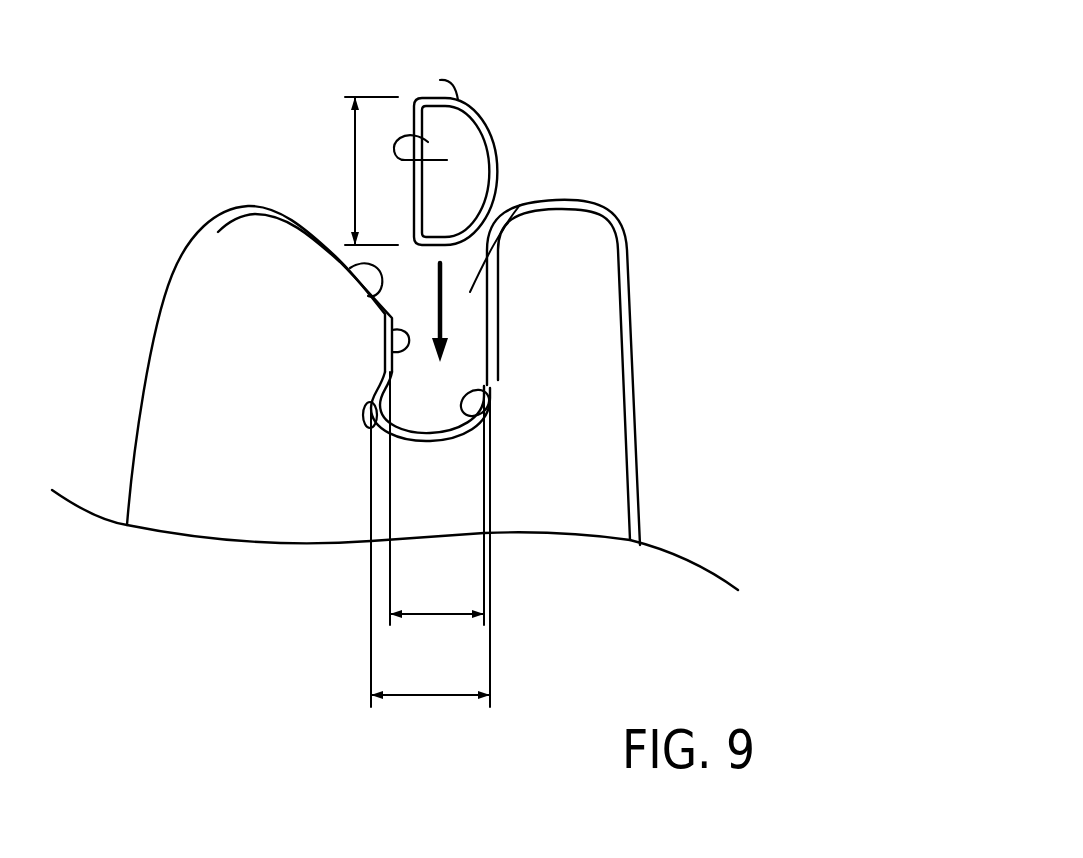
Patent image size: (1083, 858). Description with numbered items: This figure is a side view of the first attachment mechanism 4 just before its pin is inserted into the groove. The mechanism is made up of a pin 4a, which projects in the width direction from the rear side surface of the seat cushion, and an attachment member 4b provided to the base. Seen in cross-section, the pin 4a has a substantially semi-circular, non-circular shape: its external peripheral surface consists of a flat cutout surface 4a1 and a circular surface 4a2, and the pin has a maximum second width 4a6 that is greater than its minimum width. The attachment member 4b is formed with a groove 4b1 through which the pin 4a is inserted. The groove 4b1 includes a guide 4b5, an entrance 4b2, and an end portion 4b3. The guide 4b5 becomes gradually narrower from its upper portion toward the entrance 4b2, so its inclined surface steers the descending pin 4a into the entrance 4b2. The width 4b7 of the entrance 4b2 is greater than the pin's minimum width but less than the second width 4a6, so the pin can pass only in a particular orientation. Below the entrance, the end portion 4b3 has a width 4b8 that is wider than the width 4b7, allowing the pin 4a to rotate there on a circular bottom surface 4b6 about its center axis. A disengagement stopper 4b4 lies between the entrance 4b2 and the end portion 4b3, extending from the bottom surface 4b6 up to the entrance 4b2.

The first attachment mechanism 4 is at (622, 100).
The pin 4a is at (477, 120).
The flat cutout surface 4a1 is at (447, 160).
The circular surface 4a2 is at (440, 80).
The second width 4a6 is at (352, 172).
The attachment member 4b is at (636, 425).
The groove 4b1 is at (520, 205).
The entrance 4b2 is at (393, 344).
The end portion 4b3 is at (427, 408).
The disengagement stopper 4b4 is at (366, 403).
The guide 4b5 is at (355, 282).
The circular bottom surface 4b6 is at (478, 418).
The width of the entrance 4b7 is at (428, 612).
The width of the end portion 4b8 is at (428, 693).